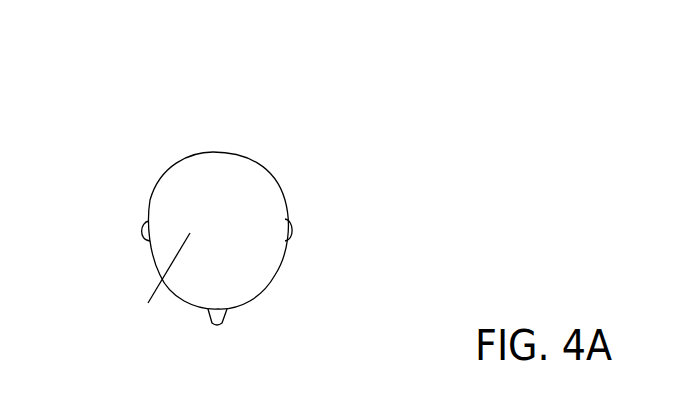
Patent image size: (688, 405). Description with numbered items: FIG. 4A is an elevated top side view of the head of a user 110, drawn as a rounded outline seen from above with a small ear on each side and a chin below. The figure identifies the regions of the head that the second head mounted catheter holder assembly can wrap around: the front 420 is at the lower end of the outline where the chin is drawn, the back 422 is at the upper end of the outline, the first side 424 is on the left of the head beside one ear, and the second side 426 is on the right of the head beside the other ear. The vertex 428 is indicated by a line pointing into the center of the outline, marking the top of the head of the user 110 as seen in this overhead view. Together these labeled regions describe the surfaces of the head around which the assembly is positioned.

The user 110 is at (343, 77).
The front 420 is at (230, 303).
The back 422 is at (217, 152).
The first side 424 is at (148, 210).
The second side 426 is at (286, 208).
The vertex 428 is at (148, 303).